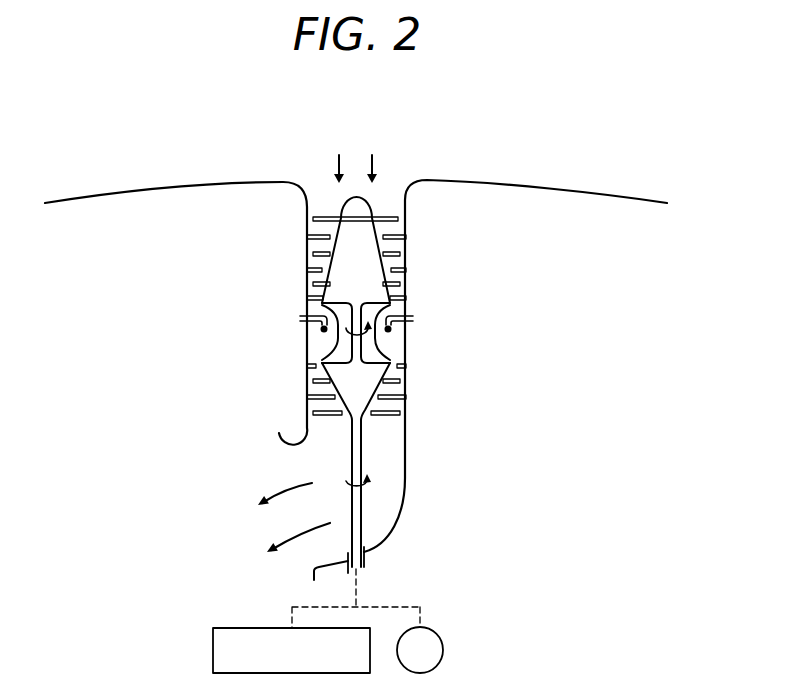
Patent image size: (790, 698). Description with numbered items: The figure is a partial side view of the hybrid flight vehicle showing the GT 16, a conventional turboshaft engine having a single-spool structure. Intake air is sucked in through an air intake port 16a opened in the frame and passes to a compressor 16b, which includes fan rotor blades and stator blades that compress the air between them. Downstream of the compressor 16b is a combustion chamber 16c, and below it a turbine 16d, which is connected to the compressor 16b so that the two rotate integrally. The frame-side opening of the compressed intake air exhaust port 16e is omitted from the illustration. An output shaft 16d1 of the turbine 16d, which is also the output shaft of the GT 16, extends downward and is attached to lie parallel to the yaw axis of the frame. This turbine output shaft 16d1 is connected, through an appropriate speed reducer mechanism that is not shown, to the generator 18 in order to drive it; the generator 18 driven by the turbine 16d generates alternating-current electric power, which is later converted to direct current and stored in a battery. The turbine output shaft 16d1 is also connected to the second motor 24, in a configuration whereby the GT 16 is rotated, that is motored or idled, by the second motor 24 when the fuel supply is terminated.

The GT (gas turbine) 16 is at (415, 301).
The air intake port 16a is at (393, 193).
The compressor 16b is at (377, 290).
The combustion chamber 16c is at (320, 348).
The turbine 16d is at (342, 392).
The output shaft of the turbine 16d1 is at (350, 503).
The compressed intake air exhaust port 16e is at (310, 553).
The generator 18 is at (213, 646).
The second motor 24 is at (441, 629).